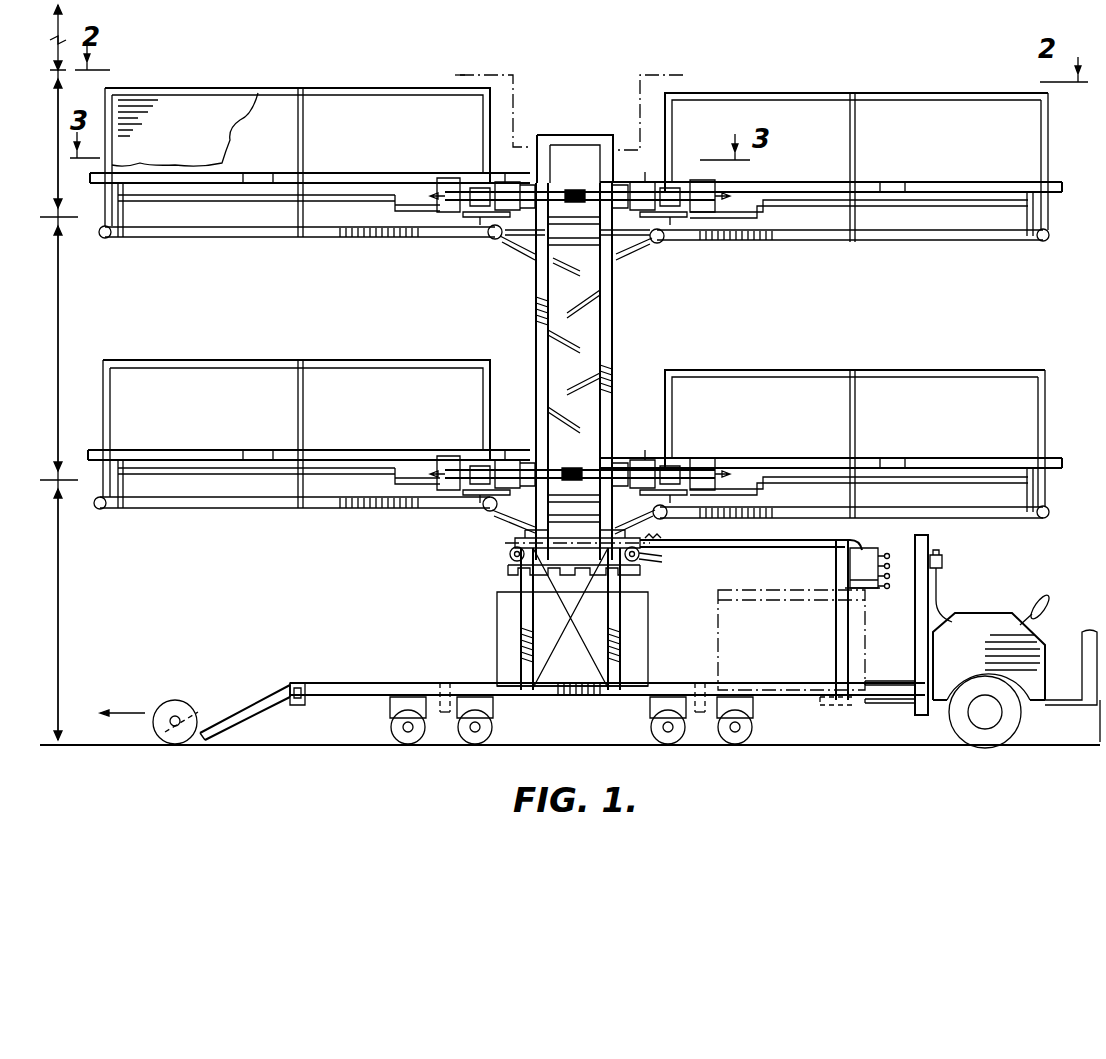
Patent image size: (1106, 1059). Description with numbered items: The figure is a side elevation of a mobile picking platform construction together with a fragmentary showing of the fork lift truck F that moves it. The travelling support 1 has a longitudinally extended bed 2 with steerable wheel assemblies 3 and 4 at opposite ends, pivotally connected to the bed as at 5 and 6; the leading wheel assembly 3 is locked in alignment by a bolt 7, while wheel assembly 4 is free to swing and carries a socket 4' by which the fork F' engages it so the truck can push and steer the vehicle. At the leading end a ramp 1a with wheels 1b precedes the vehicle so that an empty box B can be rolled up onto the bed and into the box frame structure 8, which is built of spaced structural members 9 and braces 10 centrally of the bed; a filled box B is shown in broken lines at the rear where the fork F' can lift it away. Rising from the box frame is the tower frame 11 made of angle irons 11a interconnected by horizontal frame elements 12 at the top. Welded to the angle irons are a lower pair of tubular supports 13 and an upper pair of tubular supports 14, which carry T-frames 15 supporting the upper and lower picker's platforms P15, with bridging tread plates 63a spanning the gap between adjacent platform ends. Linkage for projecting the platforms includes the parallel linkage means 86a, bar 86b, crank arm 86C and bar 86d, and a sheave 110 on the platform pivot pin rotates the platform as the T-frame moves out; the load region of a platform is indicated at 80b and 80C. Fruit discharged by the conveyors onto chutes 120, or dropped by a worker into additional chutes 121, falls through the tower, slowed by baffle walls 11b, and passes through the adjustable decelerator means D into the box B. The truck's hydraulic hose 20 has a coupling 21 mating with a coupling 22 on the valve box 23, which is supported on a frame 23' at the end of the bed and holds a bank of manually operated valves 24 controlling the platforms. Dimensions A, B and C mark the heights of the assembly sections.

The travelling support 1 is at (590, 700).
The ramp 1a is at (232, 706).
The wheels 1b is at (172, 708).
The bed 2 is at (520, 697).
The steerable wheel assembly 3 is at (390, 707).
The steerable wheel assembly 4 is at (715, 720).
The socket 4' is at (830, 718).
The pivotal connection 5 is at (445, 714).
The pivotal connection 6 is at (702, 714).
The bolt 7 is at (300, 707).
The box frame structure 8 is at (521, 605).
The structural members 9 is at (618, 620).
The braces 10 is at (590, 645).
The tower frame 11 is at (614, 320).
The angle irons 11a is at (536, 318).
The baffle walls 11b is at (580, 300).
The horizontal frame elements 12 is at (580, 140).
The tubular supports 13 is at (525, 462).
The tubular supports 14 is at (515, 182).
The T-frames 15 is at (575, 186).
The hydraulic hose 20 is at (940, 594).
The coupling 21 is at (942, 562).
The coupling 22 is at (878, 584).
The valve box 23 is at (771, 554).
The frame 23' is at (824, 620).
The bank of valves 24 is at (884, 566).
The bridging tread plate 63a is at (560, 185).
The load on pallet 80b is at (185, 129).
The pallet frame top 80C is at (258, 93).
The parallel linkage means 86a is at (122, 213).
The bar 86b is at (437, 212).
The crank arm 86C is at (380, 212).
The bar 86d is at (273, 200).
The sheave 110 is at (525, 230).
The chutes 120 is at (527, 247).
The additional chutes 121 is at (574, 369).
The picker's platforms P15 is at (372, 176).
The height dimension A is at (51, 614).
The box B is at (497, 632).
The height dimension C is at (51, 143).
The adjustable decelerator means D is at (520, 572).
The fork lift truck F is at (1015, 658).
The fork F' is at (888, 710).